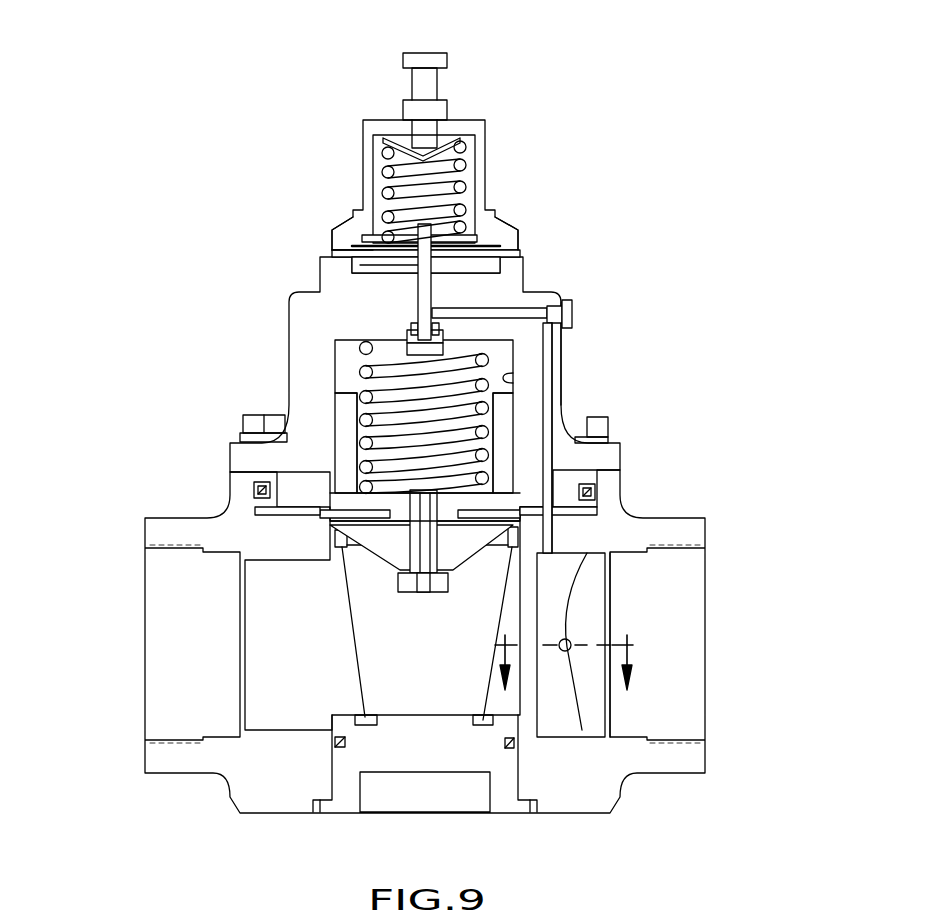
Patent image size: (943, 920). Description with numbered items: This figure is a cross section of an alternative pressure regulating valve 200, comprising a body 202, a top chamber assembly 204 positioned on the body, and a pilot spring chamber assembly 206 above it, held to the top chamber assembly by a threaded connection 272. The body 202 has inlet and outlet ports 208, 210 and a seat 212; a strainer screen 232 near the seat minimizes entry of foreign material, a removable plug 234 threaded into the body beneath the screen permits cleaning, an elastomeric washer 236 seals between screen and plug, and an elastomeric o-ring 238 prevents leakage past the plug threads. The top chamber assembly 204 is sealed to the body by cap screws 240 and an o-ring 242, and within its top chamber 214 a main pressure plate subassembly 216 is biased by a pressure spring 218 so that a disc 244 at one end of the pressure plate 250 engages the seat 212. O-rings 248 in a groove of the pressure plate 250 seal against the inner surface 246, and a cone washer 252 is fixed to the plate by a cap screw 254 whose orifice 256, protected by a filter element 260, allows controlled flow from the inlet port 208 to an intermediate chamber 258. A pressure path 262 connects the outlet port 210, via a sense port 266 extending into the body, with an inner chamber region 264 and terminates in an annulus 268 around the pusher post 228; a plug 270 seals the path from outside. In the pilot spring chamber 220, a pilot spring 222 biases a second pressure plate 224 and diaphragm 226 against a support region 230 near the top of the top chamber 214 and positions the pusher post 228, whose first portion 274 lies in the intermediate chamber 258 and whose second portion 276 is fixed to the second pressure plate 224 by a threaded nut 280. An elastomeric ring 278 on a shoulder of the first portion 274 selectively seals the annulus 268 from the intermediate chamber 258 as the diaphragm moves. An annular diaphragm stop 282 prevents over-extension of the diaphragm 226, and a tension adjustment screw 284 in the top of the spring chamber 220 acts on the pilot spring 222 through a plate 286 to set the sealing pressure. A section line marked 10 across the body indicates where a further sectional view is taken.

The pressure regulating valve 200 is at (124, 170).
The body 202 is at (144, 522).
The top chamber assembly 204 is at (740, 290).
The pilot spring chamber assembly 206 is at (688, 118).
The inlet port 208 is at (140, 589).
The outlet port 210 is at (698, 567).
The seat 212 is at (335, 533).
The top chamber 214 is at (562, 363).
The main pressure plate subassembly 216 is at (514, 443).
The pressure spring 218 is at (360, 372).
The pilot spring chamber 220 is at (362, 147).
The pilot spring 222 is at (460, 187).
The second pressure plate 224 is at (447, 243).
The diaphragm 226 is at (345, 228).
The pusher post 228 is at (345, 282).
The support region 230 is at (497, 264).
The strainer screen 232 is at (500, 623).
The removable plug 234 is at (337, 778).
The elastomeric washer 236 is at (491, 730).
The elastomeric o-ring 238 is at (337, 740).
The cap screws 240 is at (242, 426).
The o-ring 242 is at (256, 490).
The disc 244 is at (340, 513).
The inner surface 246 is at (515, 390).
The o-rings 248 is at (611, 427).
The pressure plate 250 is at (345, 445).
The cone washer 252 is at (390, 548).
The cap screw 254 is at (448, 578).
The orifice 256 is at (352, 432).
The intermediate chamber 258 is at (545, 342).
The filter element 260 is at (424, 595).
The pressure path 262 is at (552, 343).
The inner chamber region 264 is at (340, 260).
The sense port 266 is at (594, 490).
The annulus 268 is at (405, 330).
The plug 270 is at (572, 318).
The threaded connection 272 is at (507, 263).
The first portion 274 is at (405, 343).
The second portion 276 is at (453, 232).
The elastomeric ring 278 is at (412, 320).
The threaded nut 280 is at (437, 233).
The annular diaphragm stop 282 is at (335, 226).
The tension adjustment screw 284 is at (413, 53).
The plate 286 is at (466, 142).
The section line 10- 10 is at (567, 666).